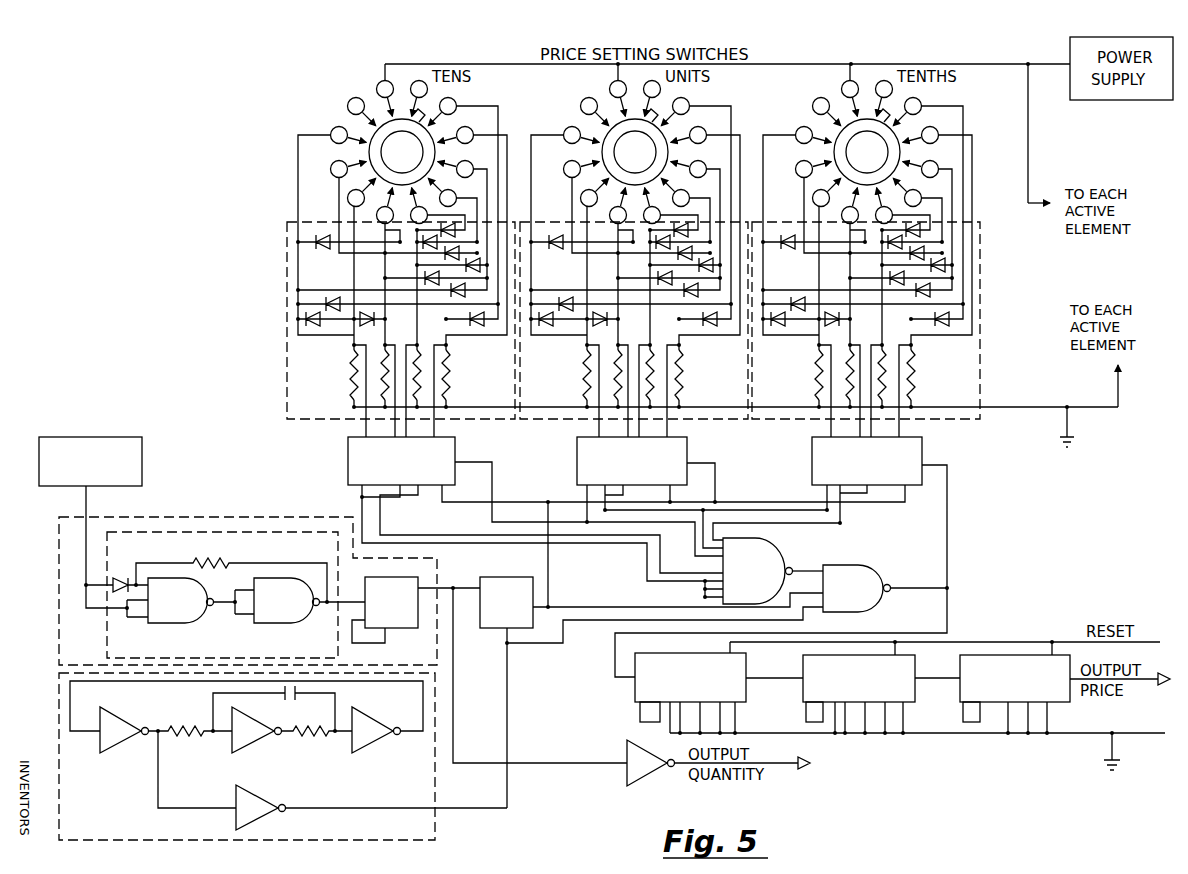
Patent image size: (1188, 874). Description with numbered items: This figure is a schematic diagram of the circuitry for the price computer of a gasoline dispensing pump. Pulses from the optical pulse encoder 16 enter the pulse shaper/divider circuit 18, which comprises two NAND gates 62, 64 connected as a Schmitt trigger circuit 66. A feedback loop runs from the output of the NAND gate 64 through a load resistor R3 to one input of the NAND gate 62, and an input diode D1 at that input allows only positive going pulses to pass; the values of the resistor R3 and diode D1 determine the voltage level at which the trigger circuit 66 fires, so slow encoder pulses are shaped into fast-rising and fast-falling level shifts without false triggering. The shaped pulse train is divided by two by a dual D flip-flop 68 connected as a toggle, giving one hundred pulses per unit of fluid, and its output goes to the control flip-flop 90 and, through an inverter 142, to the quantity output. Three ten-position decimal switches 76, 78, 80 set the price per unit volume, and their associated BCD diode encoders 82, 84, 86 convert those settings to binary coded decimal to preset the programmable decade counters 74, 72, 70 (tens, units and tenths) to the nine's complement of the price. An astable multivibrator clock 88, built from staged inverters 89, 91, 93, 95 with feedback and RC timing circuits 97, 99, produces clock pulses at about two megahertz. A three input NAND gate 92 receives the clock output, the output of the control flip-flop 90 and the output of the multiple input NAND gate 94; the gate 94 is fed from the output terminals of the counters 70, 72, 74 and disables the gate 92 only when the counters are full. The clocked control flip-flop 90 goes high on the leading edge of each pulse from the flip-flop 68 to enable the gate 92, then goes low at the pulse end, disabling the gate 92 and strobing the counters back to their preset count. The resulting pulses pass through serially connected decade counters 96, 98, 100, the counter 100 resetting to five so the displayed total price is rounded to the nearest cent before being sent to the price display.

The optical pulse encoder 16 is at (117, 437).
The pulse shaper/divider circuit 18 is at (200, 517).
The Schmitt trigger circuit 66 is at (270, 532).
The NAND gate 62 is at (178, 623).
The NAND gate 64 is at (288, 623).
The dual D flip-flop 68 is at (420, 628).
The input control flip-flop 90 is at (495, 628).
The programmable decade counter 70 is at (843, 463).
The programmable decade counter 72 is at (607, 463).
The programmable decade counter 74 is at (348, 472).
The decimal switch 76 is at (384, 112).
The decimal switch 78 is at (630, 147).
The decimal switch 80 is at (862, 147).
The BCD diode encoder 82 is at (312, 422).
The BCD diode encoder 84 is at (633, 255).
The BCD diode encoder 86 is at (865, 255).
The astable multivibrator clock 88 is at (392, 840).
The inverter 89 is at (122, 748).
The inverter 91 is at (245, 748).
The inverter 93 is at (378, 742).
The inverter 95 is at (262, 818).
The feedback circuit 97 is at (130, 681).
The RC timing circuit 99 is at (340, 700).
The three input NAND gate 92 is at (858, 567).
The multiple input NAND gate 94 is at (760, 558).
The decade counter 96 is at (635, 695).
The decade counter 98 is at (803, 697).
The decade counter 100 is at (960, 697).
The output inverter 142 is at (620, 775).
The load resistor R3 is at (231, 572).
The input diode D1 is at (126, 579).